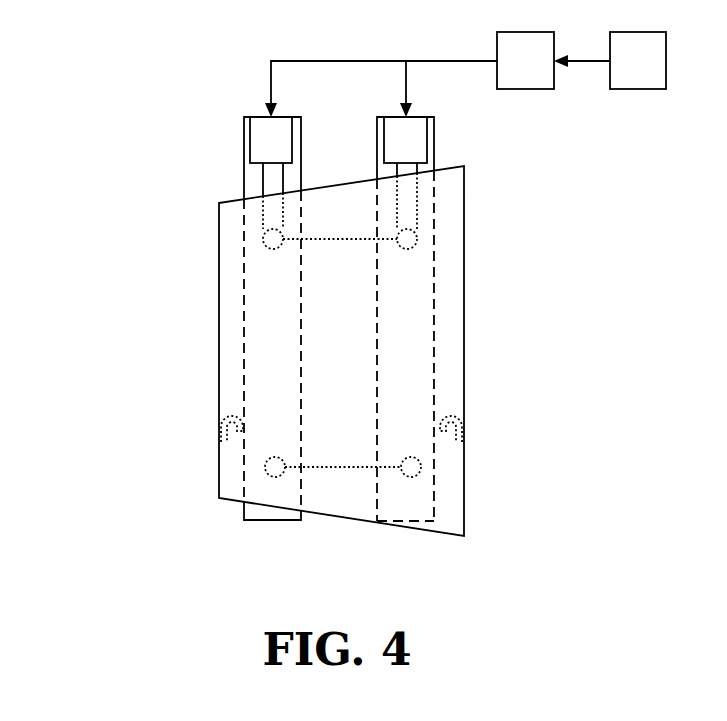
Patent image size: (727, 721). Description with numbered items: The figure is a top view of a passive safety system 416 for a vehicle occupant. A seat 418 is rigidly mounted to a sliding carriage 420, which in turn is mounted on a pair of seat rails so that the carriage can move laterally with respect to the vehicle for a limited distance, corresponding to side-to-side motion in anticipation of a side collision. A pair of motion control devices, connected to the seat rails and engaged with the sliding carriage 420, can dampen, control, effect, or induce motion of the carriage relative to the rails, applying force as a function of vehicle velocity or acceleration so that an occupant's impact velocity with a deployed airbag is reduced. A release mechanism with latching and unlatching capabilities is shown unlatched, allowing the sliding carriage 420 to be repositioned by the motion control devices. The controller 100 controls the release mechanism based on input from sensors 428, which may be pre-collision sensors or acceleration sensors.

The passive safety system 416 is at (150, 58).
The controller 100 is at (525, 60).
The sensors 428 is at (610, 60).
The seat 418 is at (219, 345).
The sliding carriage 420 is at (343, 467).